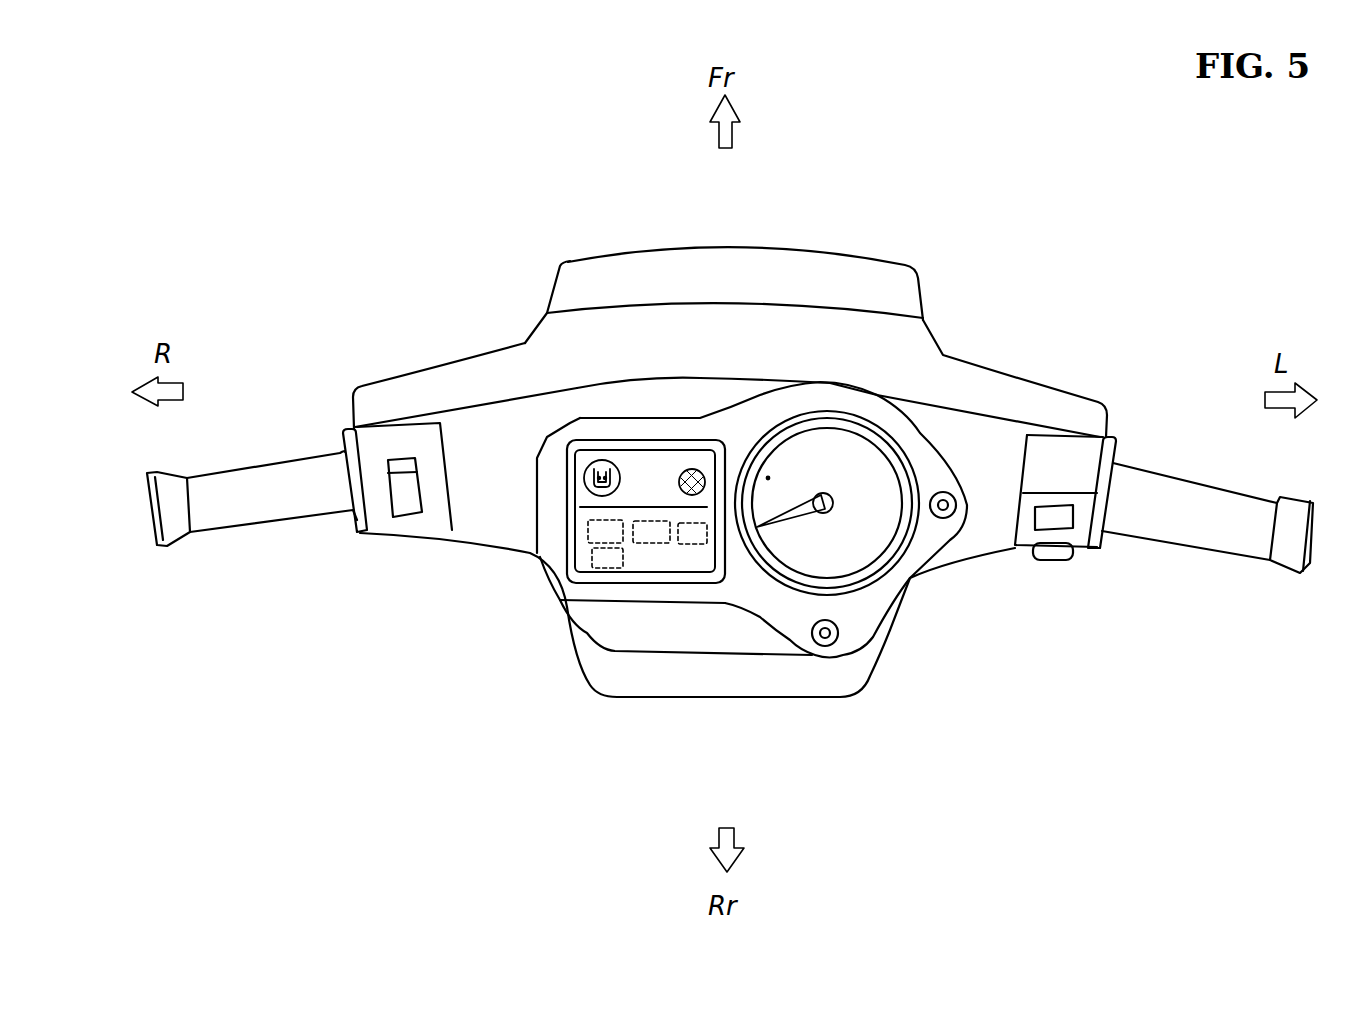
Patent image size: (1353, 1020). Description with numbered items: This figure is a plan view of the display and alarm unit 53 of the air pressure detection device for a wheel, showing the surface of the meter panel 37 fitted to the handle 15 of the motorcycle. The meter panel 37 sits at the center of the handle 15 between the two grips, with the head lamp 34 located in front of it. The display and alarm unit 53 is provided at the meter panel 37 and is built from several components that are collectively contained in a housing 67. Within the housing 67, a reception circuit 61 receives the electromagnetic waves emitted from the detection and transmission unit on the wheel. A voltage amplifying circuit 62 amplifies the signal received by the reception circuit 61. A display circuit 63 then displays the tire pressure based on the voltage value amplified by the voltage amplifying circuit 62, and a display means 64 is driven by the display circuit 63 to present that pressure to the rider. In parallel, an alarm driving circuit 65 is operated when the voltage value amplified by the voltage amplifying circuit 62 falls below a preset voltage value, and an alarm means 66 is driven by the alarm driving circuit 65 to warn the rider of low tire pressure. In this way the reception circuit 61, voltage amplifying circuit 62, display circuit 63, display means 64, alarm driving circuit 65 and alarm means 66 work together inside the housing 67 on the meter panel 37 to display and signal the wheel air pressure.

The handle 15 is at (1140, 470).
The head lamp 34 is at (835, 254).
The meter panel 37 is at (920, 433).
The display and alarm unit 53 is at (641, 421).
The reception circuit 61 is at (588, 532).
The voltage amplifying circuit 62 is at (650, 543).
The display circuit 63 is at (693, 545).
The display means 64 is at (610, 458).
The alarm driving circuit 65 is at (590, 560).
The alarm means 66 is at (693, 467).
The housing 67 is at (566, 468).